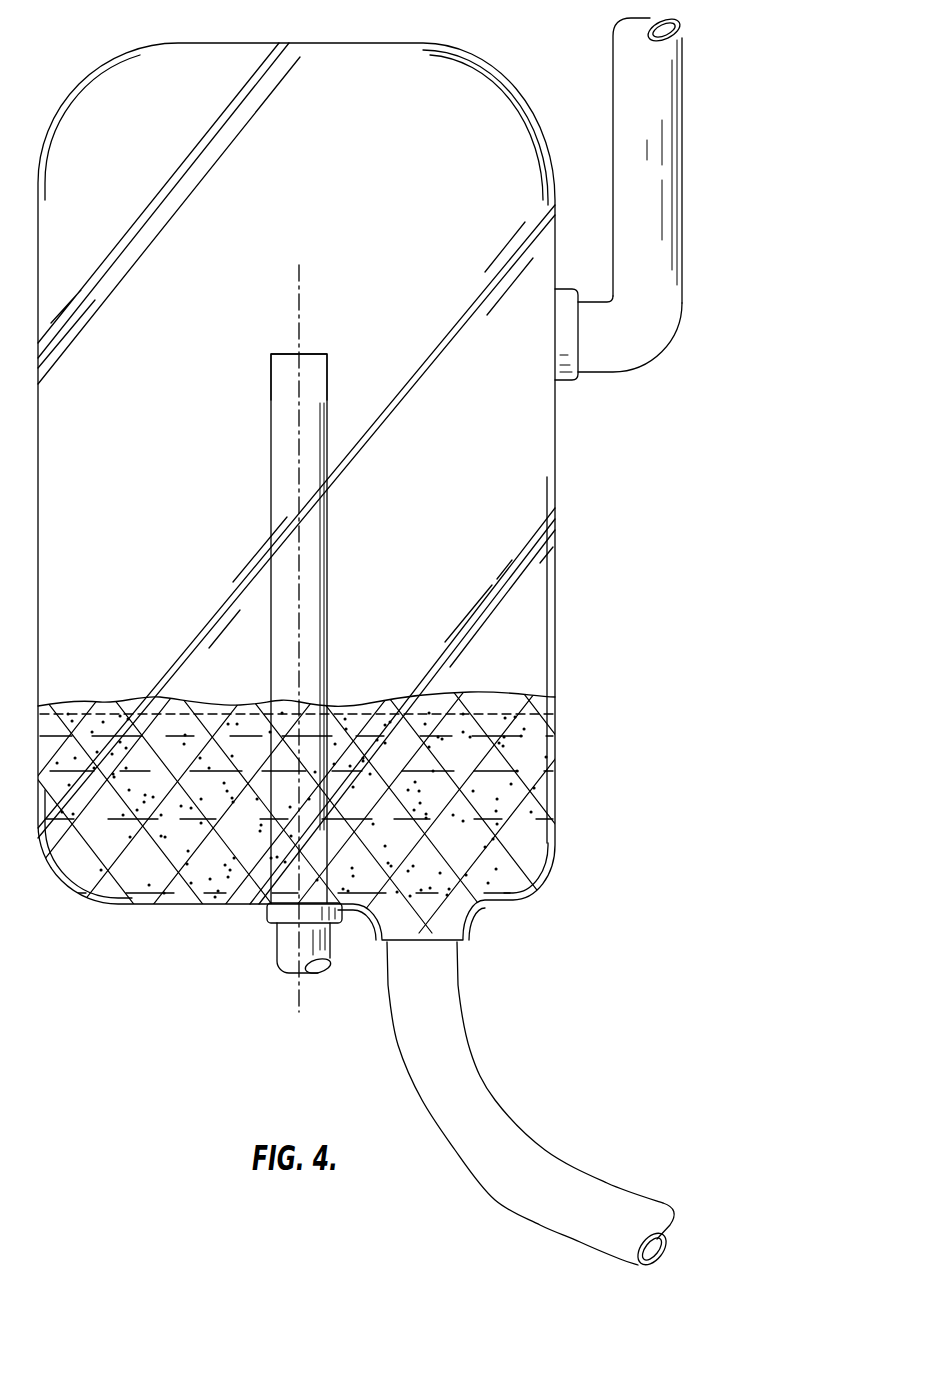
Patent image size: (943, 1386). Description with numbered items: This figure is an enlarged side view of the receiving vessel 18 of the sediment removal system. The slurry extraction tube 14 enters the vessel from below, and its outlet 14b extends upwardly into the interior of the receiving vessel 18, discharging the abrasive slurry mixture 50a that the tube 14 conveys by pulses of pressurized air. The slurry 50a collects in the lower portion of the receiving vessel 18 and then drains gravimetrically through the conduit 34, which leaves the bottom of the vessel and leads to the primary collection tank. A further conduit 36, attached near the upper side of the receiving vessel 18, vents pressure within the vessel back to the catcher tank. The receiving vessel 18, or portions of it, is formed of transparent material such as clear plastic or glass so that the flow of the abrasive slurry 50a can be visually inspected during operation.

The slurry extraction tube 14 is at (328, 696).
The outlet 14b is at (315, 363).
The receiving vessel 18 is at (562, 603).
The conduit 34 is at (517, 1117).
The conduit 36 is at (683, 205).
The abrasive slurry mixture 50a is at (547, 758).